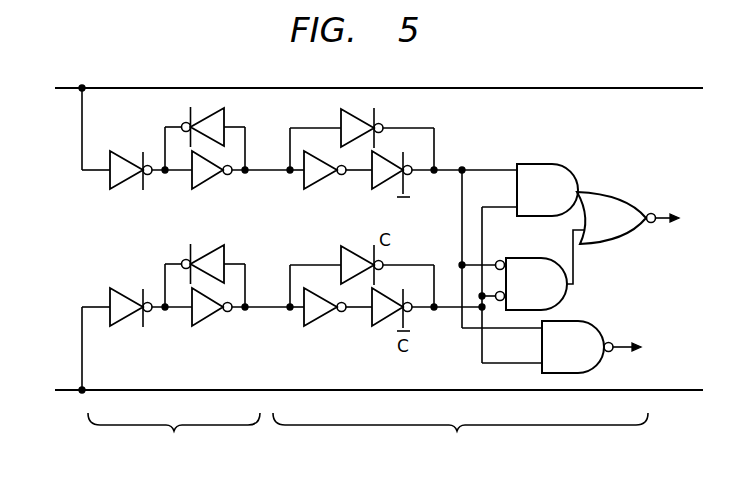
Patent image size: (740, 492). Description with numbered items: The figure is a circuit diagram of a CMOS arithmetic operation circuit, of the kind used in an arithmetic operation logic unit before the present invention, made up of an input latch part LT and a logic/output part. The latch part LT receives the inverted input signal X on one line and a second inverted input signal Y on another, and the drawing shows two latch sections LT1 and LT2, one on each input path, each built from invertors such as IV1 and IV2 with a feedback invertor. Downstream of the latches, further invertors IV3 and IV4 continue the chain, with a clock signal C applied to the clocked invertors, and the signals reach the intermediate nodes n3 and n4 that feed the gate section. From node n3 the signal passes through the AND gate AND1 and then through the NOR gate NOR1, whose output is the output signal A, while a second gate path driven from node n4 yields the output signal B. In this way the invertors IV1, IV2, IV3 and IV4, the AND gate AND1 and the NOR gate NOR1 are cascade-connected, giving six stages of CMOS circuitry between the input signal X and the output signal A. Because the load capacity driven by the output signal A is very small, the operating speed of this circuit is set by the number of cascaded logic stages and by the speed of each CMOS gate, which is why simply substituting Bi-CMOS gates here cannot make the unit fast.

The input signal X is at (47, 77).
The inverted input signal Y-bar line Y is at (47, 379).
The first latch circuit LT1 is at (258, 213).
The second latch circuit LT2 is at (252, 364).
The invertor IV1 is at (117, 183).
The invertor IV2 is at (199, 188).
The invertor IV3 is at (312, 190).
The invertor IV4 is at (380, 188).
The clock signal C is at (362, 137).
The node n3 is at (448, 170).
The node n4 is at (445, 309).
The AND gate AND1 is at (541, 164).
The NOR gate NOR1 is at (617, 193).
The output signal A is at (676, 219).
The output signal B is at (635, 349).
The input latch part LT is at (174, 436).